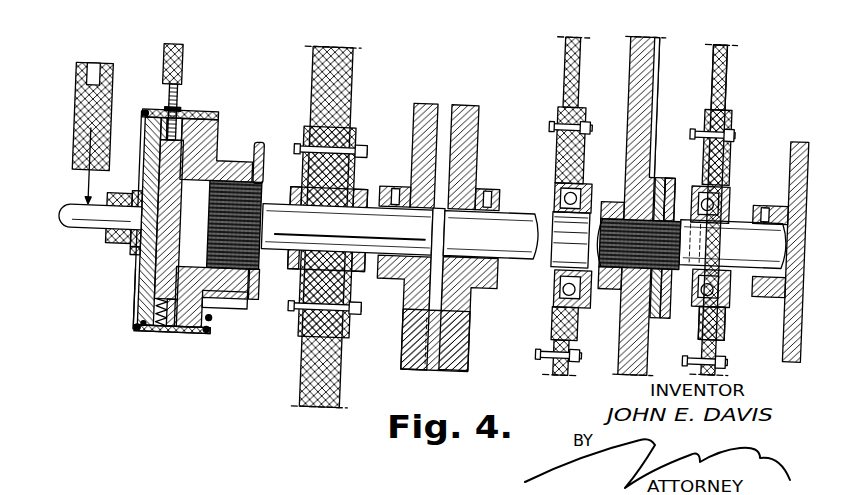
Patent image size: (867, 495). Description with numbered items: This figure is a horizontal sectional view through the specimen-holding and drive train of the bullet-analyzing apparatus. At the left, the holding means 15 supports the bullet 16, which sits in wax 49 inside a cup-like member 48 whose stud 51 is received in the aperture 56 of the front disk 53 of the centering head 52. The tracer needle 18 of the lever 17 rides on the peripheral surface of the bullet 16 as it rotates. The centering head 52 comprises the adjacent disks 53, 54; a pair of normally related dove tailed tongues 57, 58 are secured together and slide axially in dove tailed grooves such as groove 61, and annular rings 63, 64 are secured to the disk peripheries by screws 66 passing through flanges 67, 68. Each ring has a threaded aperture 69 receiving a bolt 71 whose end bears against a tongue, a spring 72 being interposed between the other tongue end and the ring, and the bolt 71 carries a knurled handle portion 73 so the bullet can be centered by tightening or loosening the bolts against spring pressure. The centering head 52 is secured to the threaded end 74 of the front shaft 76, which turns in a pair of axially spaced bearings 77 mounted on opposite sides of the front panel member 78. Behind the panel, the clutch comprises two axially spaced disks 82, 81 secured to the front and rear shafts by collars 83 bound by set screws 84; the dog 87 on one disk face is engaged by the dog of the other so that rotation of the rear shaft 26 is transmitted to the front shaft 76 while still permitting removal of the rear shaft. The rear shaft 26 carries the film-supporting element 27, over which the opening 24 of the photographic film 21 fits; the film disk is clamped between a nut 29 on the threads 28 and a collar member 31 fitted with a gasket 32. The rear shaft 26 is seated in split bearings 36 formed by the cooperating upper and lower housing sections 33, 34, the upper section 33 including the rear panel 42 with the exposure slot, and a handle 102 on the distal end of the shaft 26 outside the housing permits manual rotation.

The holding means 15 is at (133, 319).
The bullet 16 is at (60, 242).
The lever 17 is at (70, 109).
The needle 18 is at (83, 190).
The photographic film 21 is at (655, 50).
The opening 24 is at (657, 338).
The rear shaft 26 is at (463, 237).
The film-supporting element 27 is at (622, 50).
The threads 28 is at (675, 206).
The nut 29 is at (583, 180).
The collar member 31 is at (670, 310).
The gasket 32 is at (658, 169).
The upper housing section 33 is at (726, 61).
The lower housing section 34 is at (734, 325).
The split bearing 36 is at (733, 178).
The rear panel 42 is at (722, 81).
The cup-like member 48 is at (118, 256).
The wax 49 is at (110, 253).
The stud 51 is at (131, 272).
The centering head 52 is at (138, 153).
The front disk 53 is at (137, 169).
The rear disk 54 is at (214, 133).
The aperture 56 is at (133, 206).
The dove tailed tongue 57 is at (139, 298).
The dove tailed tongue 58 is at (232, 167).
The dove tailed groove 61 is at (185, 127).
The annular ring 63 is at (144, 343).
The annular ring 64 is at (208, 343).
The screws 66 is at (138, 126).
The flange 67 is at (145, 338).
The flange 68 is at (216, 326).
The threaded aperture 69 is at (160, 119).
The bolt 71 is at (173, 100).
The spring 72 is at (167, 340).
The knurled handle portion 73 is at (157, 72).
The threaded end 74 is at (262, 172).
The front shaft 76 is at (397, 238).
The bearings 77 is at (362, 160).
The front panel member 78 is at (306, 71).
The clutch disk 81 is at (474, 128).
The clutch disk 82 is at (409, 117).
The collars 83 is at (488, 187).
The set screws 84 is at (393, 188).
The dog 87 is at (435, 370).
The handle 102 is at (796, 128).